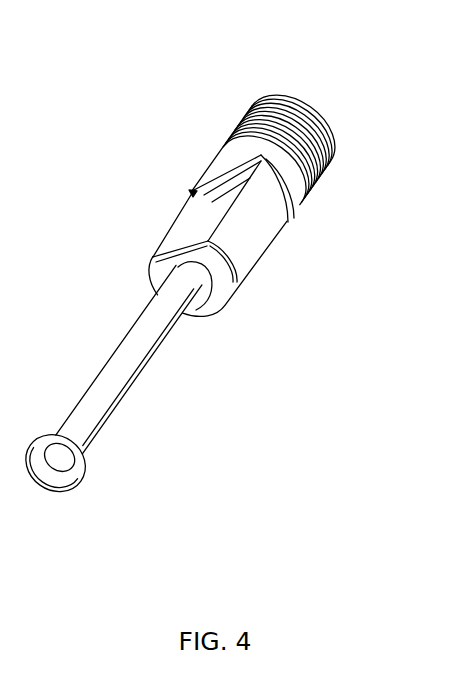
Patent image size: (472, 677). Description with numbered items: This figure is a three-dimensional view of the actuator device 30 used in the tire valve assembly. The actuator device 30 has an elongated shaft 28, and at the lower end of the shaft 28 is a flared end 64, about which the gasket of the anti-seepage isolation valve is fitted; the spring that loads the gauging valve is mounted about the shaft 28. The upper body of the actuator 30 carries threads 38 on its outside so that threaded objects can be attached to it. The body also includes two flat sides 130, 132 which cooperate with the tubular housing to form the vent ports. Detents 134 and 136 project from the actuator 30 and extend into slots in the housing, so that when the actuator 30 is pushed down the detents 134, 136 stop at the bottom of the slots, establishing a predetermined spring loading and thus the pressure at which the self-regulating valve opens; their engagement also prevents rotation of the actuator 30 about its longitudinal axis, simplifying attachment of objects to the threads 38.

The actuator device 30 is at (182, 50).
The threads 38 is at (324, 137).
The shaft 28 is at (103, 356).
The flared end 64 is at (84, 480).
The flat side 130 is at (188, 227).
The flat side 132 is at (212, 310).
The detent 134 is at (190, 192).
The detent 136 is at (290, 220).